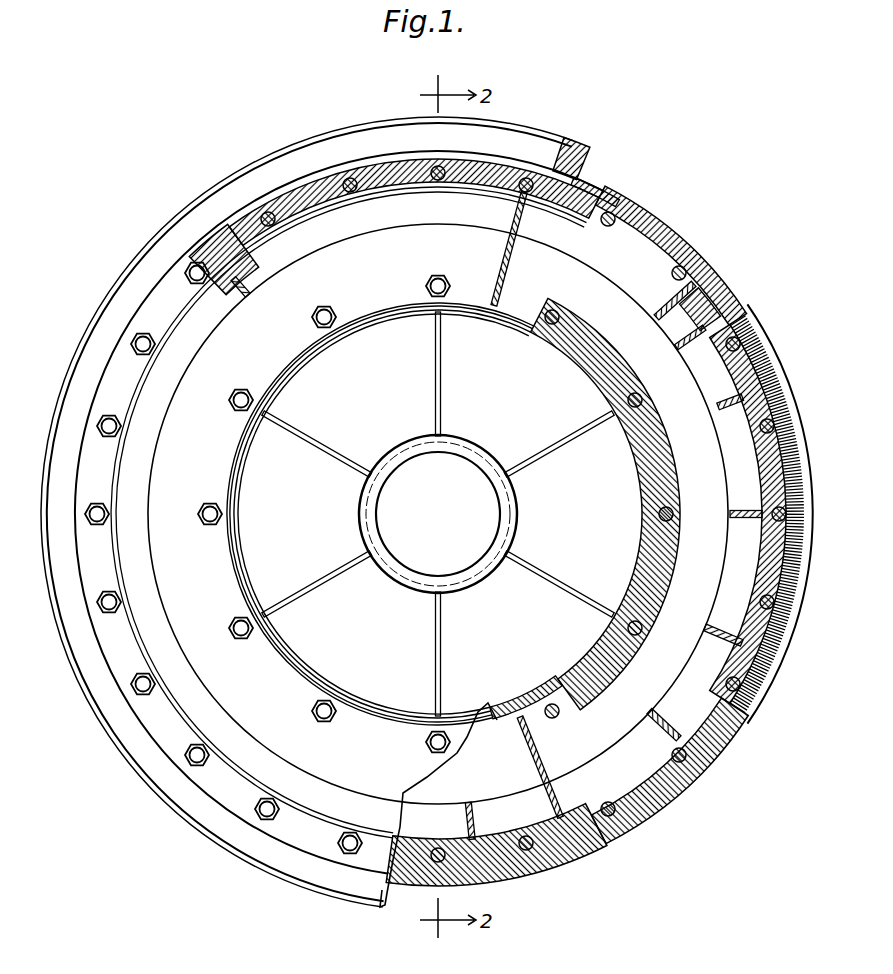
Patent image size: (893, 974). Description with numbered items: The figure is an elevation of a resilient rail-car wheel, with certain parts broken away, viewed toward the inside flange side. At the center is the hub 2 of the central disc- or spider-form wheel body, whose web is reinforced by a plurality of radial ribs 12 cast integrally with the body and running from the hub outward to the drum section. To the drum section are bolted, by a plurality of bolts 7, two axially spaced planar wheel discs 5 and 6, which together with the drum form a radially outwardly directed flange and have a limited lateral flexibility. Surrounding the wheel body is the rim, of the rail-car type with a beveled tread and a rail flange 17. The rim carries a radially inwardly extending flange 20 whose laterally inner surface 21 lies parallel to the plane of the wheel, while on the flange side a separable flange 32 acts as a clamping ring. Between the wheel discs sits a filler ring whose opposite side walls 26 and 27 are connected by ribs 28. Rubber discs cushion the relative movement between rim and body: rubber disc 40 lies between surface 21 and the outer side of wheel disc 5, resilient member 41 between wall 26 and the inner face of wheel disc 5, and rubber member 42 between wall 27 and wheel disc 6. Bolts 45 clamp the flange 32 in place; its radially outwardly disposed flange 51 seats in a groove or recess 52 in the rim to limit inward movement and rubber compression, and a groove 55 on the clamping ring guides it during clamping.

The hub 2 is at (393, 450).
The wheel disc 5 is at (537, 714).
The wheel disc 6 is at (478, 295).
The bolts 7 is at (430, 300).
The radial ribs 12 is at (540, 443).
The rail flange 17 is at (514, 133).
The flange 20 is at (452, 803).
The laterally inner surface 21 is at (437, 812).
The side wall 26 is at (700, 642).
The side wall 27 is at (678, 318).
The ribs 28 is at (722, 396).
The separable flange 32 is at (230, 288).
The rubber disc 40 is at (517, 797).
The resilient member 41 is at (672, 697).
The rubber member 42 is at (295, 258).
The bolts 45 is at (140, 335).
The radially outwardly disposed flange 51 is at (210, 240).
The groove or recess 52 is at (545, 165).
The groove 55 is at (572, 180).